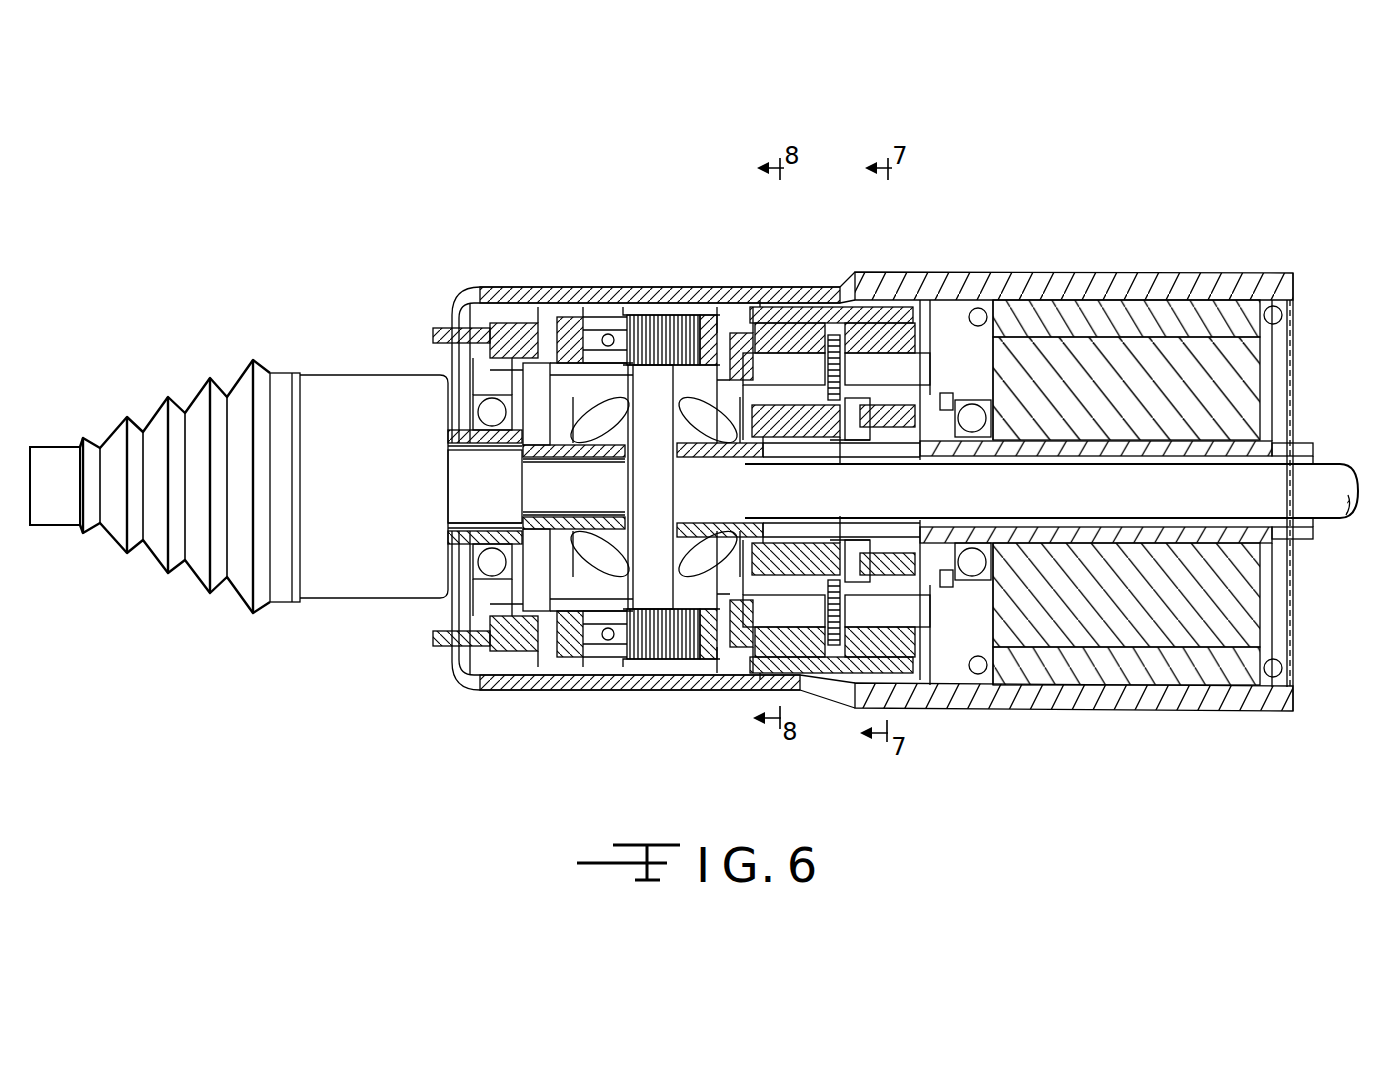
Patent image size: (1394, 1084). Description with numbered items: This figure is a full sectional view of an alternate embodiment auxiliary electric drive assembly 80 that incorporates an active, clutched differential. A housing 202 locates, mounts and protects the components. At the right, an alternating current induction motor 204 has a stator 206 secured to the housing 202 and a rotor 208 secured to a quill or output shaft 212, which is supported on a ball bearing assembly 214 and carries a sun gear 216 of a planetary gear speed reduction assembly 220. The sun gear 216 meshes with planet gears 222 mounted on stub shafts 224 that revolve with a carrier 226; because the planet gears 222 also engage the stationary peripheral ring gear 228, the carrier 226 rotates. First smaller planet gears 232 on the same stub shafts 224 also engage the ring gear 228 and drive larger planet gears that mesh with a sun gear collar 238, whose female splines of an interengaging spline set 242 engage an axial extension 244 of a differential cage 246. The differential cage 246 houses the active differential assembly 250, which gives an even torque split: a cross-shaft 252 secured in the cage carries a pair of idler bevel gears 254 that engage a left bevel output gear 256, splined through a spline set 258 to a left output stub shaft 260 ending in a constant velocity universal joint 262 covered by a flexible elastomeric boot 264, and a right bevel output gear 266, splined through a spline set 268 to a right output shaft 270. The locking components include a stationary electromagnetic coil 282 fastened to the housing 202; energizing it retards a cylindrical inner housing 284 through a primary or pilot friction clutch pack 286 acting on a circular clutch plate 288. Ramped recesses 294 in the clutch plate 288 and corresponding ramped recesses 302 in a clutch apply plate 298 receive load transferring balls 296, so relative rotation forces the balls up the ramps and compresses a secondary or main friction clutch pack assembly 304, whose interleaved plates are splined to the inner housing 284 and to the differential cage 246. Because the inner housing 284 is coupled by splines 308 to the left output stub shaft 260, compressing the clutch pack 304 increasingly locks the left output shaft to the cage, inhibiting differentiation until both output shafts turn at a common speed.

The auxiliary electric drive assembly 80 is at (972, 197).
The housing 202 is at (818, 295).
The alternating current induction motor 204 is at (1297, 246).
The stator 206 is at (1185, 318).
The rotor 208 is at (1231, 394).
The quill or output shaft 212 is at (1105, 452).
The ball bearing assembly 214 is at (961, 400).
The sun gear 216 is at (905, 456).
The planetary gear speed reduction assembly 220 is at (840, 262).
The planet gears 222 is at (862, 350).
The stub shafts 224 is at (850, 335).
The carrier 226 is at (760, 307).
The ring gear 228 is at (798, 676).
The first smaller planet gears 232 is at (800, 693).
The sun gear collar 238 is at (782, 440).
The interengaging spline set 242 is at (830, 462).
The axial extension 244 is at (815, 456).
The differential cage 246 is at (737, 307).
The active differential assembly 250 is at (704, 228).
The cross-shaft 252 is at (612, 630).
The idler bevel gears 254 is at (657, 307).
The left bevel output gear 256 is at (466, 672).
The interengaging spline set 258 is at (576, 460).
The left output stub shaft 260 is at (465, 484).
The constant velocity universal joint 262 is at (327, 400).
The flexible elastomeric boot 264 is at (170, 398).
The right bevel output gear 266 is at (742, 632).
The interengaging spline set 268 is at (690, 462).
The right output shaft 270 is at (1339, 485).
The electromagnetic coil 282 is at (480, 292).
The cylindrical inner housing 284 is at (484, 290).
The primary or pilot friction clutch pack 286 is at (560, 307).
The circular clutch plate 288 is at (530, 307).
The ramped recesses 294 is at (570, 300).
The ball bearing 296 is at (598, 307).
The clutch apply plate 298 is at (640, 307).
The ramped recesses 302 is at (620, 307).
The secondary or main friction clutch pack assembly 304 is at (698, 658).
The interengaging set of splines 308 is at (465, 514).